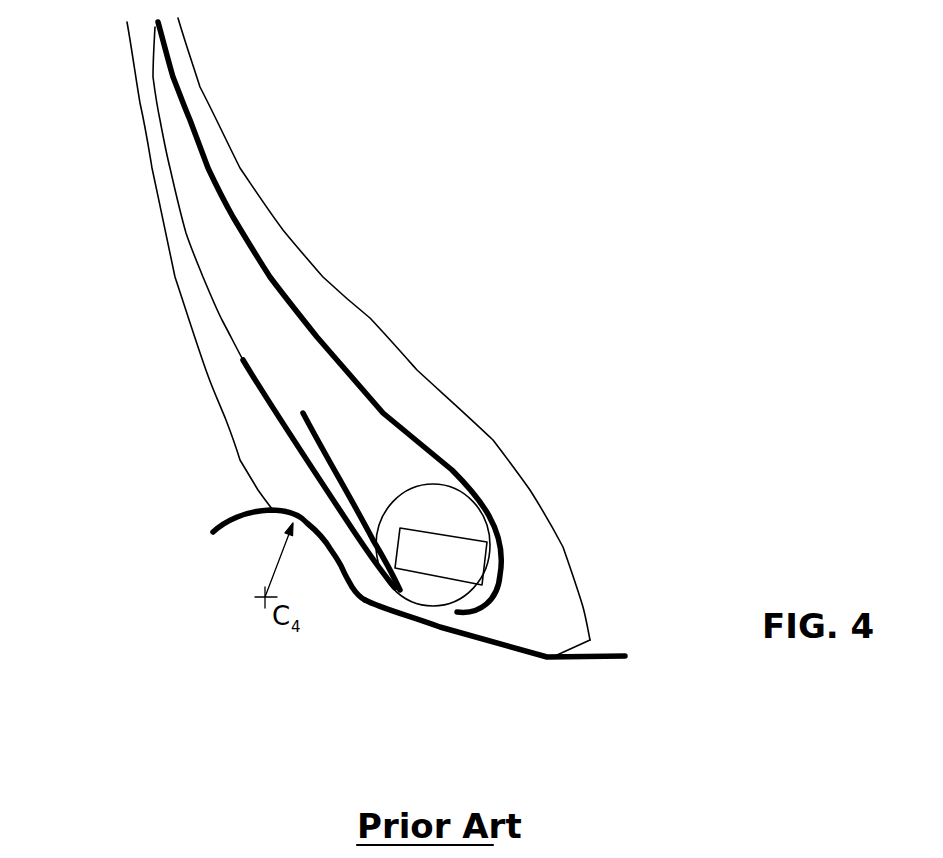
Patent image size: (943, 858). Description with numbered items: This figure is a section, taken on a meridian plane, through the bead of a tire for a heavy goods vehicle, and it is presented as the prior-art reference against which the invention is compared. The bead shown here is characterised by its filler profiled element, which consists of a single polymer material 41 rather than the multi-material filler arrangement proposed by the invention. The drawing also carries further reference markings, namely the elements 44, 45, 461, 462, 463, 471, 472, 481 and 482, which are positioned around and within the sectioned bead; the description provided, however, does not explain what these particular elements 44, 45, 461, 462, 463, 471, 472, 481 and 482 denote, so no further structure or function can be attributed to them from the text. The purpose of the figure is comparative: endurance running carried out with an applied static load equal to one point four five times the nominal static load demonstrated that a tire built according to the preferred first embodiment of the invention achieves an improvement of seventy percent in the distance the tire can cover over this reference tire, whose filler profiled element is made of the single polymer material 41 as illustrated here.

The single polymer material 41 is at (340, 422).
The pressure side shell 44 is at (153, 148).
The suction side shell 45 is at (200, 112).
The first reinforcing layer 461 is at (253, 249).
The second reinforcing layer 462 is at (320, 458).
The third reinforcing layer 463 is at (270, 403).
The rectangular insert 471 is at (443, 560).
The circular core 472 is at (427, 510).
The upper trailing edge surface 481 is at (228, 518).
The lower trailing edge surface 482 is at (463, 633).